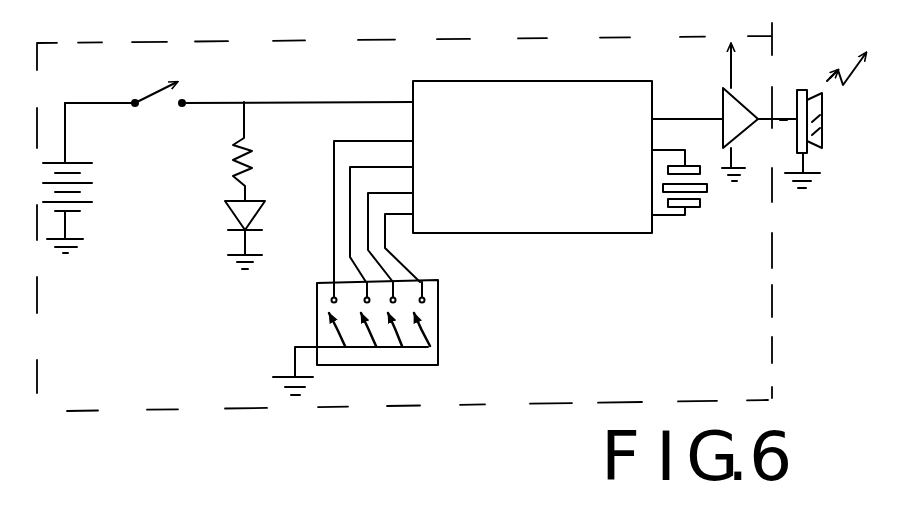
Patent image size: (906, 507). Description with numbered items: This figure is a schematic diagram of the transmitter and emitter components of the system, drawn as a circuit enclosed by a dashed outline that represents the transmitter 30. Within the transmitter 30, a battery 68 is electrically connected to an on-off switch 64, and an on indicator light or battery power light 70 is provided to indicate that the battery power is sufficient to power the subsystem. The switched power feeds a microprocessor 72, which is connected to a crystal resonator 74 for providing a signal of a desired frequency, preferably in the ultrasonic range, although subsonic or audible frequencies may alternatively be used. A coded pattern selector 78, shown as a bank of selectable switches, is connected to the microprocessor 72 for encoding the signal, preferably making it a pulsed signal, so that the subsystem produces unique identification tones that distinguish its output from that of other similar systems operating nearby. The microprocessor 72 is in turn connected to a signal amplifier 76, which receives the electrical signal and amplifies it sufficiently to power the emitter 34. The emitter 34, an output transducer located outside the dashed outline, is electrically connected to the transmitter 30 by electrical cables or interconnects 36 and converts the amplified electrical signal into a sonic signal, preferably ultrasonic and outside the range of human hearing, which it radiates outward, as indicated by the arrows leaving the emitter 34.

The transmitter 30 is at (743, 378).
The emitter 34 is at (808, 82).
The electrical cables or interconnects 36 is at (781, 121).
The on-off switch 64 is at (138, 89).
The battery 68 is at (101, 203).
The battery power light 70 is at (212, 239).
The microprocessor 72 is at (615, 219).
The crystal resonator 74 is at (699, 213).
The signal amplifier 76 is at (710, 91).
The coded pattern selector 78 is at (443, 325).